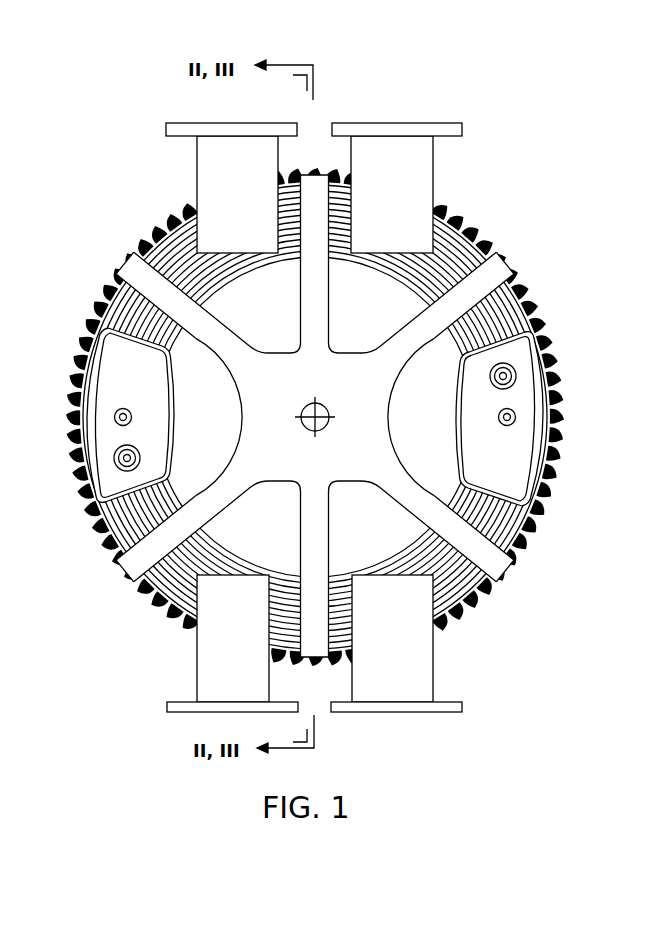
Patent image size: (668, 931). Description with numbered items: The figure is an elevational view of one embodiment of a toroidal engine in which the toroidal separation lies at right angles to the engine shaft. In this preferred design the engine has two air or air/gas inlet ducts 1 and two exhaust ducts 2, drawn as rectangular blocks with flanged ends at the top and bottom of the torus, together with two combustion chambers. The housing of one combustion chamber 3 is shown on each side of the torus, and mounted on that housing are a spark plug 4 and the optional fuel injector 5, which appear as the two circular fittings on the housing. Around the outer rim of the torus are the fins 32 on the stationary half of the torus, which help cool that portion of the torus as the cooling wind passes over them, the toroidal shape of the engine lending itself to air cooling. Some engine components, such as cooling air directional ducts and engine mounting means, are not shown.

The air or air/gas inlet duct 1 is at (435, 167).
The exhaust duct 2 is at (197, 177).
The combustion chamber housing 3 is at (504, 465).
The spark plug 4 is at (517, 368).
The fuel injector 5 is at (520, 412).
The fins 32 is at (478, 228).